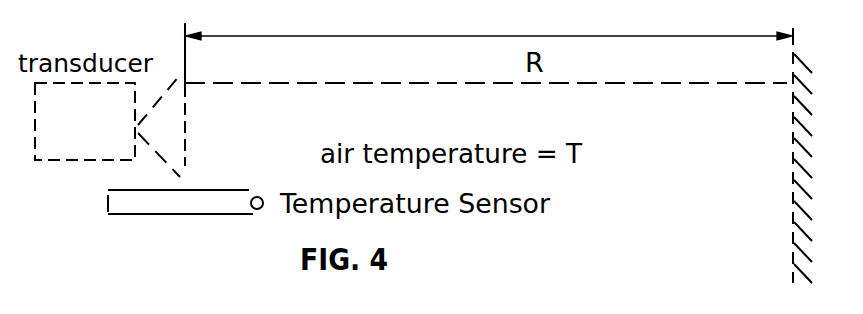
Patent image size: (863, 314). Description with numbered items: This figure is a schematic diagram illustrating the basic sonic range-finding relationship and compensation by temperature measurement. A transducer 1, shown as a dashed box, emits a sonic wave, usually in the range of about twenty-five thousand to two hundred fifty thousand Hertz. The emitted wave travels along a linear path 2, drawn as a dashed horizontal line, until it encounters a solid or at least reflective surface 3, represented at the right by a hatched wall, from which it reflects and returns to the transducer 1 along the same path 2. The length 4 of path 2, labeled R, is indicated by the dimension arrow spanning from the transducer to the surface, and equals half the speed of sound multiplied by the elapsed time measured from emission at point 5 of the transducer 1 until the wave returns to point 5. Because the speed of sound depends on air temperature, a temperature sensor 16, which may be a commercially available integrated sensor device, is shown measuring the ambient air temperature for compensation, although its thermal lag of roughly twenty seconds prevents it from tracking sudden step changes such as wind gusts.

The transducer 1 is at (60, 161).
The linear path 2 is at (238, 83).
The reflective surface 3 is at (795, 32).
The length of path 4 is at (428, 36).
The point 5 is at (172, 100).
The temperature sensor 16 is at (259, 197).